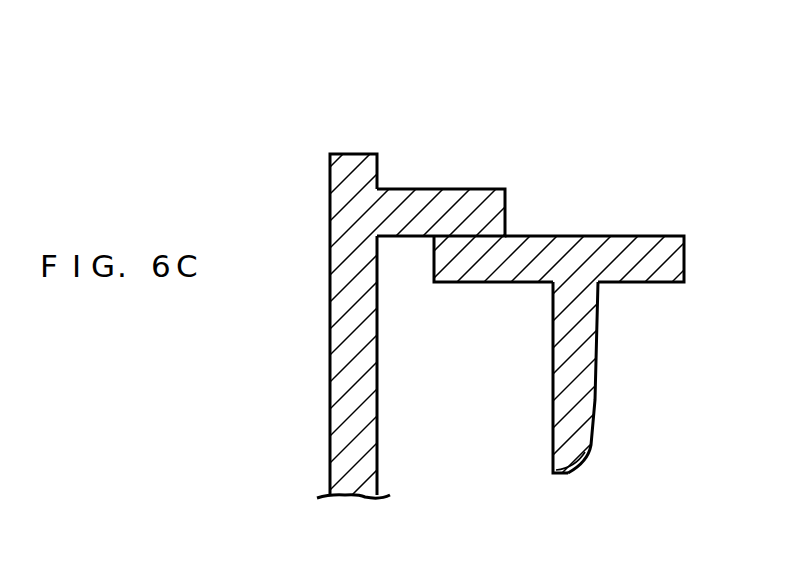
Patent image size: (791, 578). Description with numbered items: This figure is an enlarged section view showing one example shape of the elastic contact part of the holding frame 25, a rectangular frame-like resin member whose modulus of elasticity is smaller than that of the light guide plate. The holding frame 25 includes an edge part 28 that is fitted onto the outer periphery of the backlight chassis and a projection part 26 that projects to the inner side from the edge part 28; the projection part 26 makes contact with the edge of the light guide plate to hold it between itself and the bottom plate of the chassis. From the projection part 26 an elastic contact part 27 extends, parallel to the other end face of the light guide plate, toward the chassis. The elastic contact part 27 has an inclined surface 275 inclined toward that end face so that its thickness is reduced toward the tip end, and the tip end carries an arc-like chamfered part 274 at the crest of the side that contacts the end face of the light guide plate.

The holding frame 25 is at (455, 127).
The projection part 26 is at (686, 258).
The elastic contact part 27 is at (598, 315).
The edge part 28 is at (329, 180).
The arc-like chamfered part 274 is at (585, 462).
The inclined surface 275 is at (595, 400).